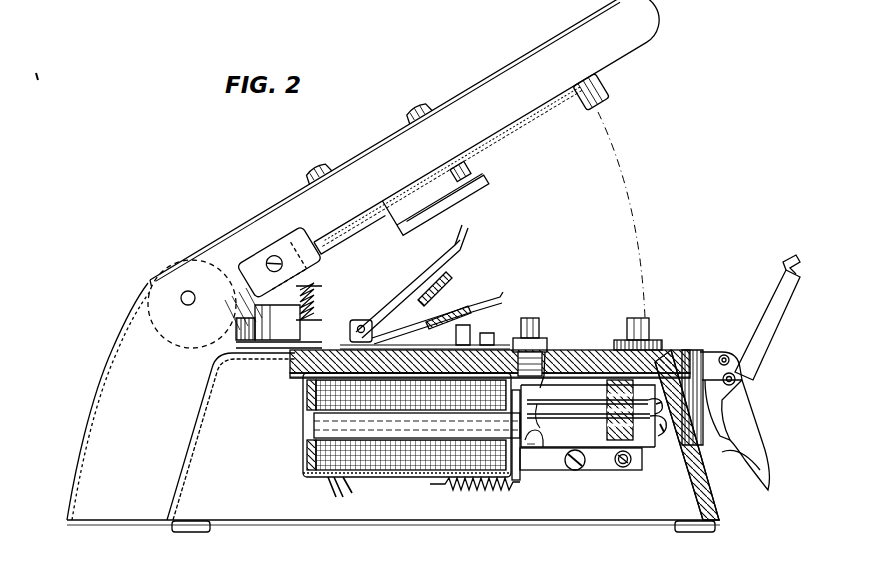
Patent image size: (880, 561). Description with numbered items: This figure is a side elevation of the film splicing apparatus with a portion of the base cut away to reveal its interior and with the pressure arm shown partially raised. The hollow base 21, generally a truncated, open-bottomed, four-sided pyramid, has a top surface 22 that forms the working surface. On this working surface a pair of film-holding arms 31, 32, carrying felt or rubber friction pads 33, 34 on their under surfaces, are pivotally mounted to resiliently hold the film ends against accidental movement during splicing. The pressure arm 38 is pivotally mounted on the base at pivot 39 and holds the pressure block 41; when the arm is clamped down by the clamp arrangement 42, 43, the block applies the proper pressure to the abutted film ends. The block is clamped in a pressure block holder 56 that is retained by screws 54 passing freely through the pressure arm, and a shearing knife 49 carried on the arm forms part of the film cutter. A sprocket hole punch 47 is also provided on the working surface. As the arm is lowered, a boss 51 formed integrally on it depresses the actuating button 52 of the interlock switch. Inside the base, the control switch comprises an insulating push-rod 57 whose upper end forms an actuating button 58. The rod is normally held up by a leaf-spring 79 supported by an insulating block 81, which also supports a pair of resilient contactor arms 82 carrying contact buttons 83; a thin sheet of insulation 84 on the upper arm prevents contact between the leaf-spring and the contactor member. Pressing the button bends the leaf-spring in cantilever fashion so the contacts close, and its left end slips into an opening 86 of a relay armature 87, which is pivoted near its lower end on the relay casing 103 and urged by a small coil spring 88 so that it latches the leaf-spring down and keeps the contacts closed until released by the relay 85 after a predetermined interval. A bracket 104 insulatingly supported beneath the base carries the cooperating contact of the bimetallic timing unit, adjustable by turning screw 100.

The hollow base 21 is at (115, 390).
The top surface 22 is at (586, 348).
The film-holding arm 31 is at (412, 300).
The film-holding arm 32 is at (412, 326).
The friction pad 33 is at (452, 272).
The friction pad 34 is at (480, 304).
The pressure arm 38 is at (493, 78).
The pivot 39 is at (188, 291).
The pressure block 41 is at (445, 200).
The clamp arrangement 42 is at (760, 347).
The clamp arrangement 43 is at (748, 412).
The sprocket hole punch 47 is at (329, 293).
The shearing knife 49 is at (260, 262).
The projection or boss 51 is at (604, 96).
The actuating button 52 is at (650, 330).
The screw 54 is at (412, 112).
The pressure block holder 56 is at (470, 172).
The insulating push-rod 57 is at (514, 348).
The actuating button 58 is at (540, 322).
The leaf-spring 79 is at (556, 385).
The insulating block 81 is at (650, 420).
The resilient contactor arm 82 is at (582, 418).
The contact button 83 is at (545, 406).
The sheet of insulation 84 is at (614, 385).
The relay 85 is at (360, 477).
The opening 86 is at (510, 408).
The relay armature 87 is at (547, 452).
The coil spring 88 is at (480, 490).
The screw 100 is at (585, 468).
The relay casing 103 is at (398, 480).
The bracket 104 is at (642, 470).